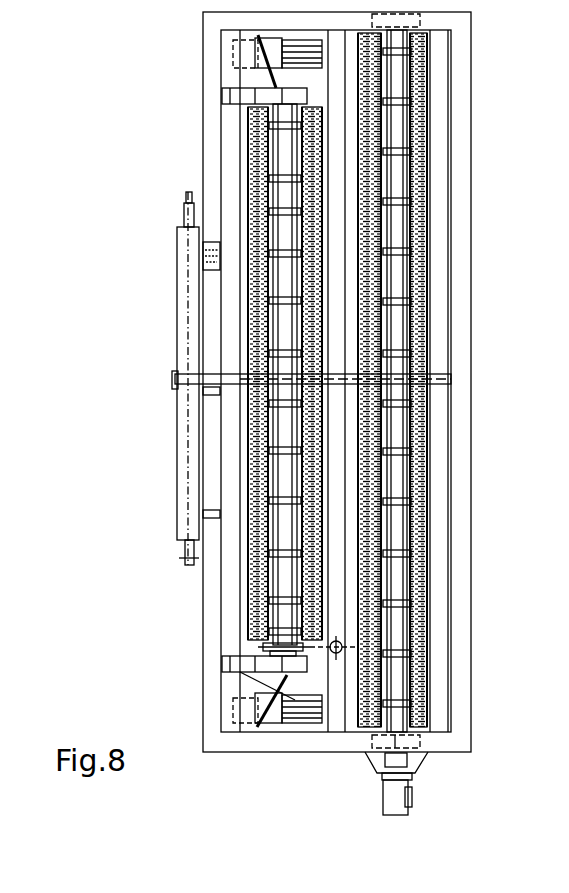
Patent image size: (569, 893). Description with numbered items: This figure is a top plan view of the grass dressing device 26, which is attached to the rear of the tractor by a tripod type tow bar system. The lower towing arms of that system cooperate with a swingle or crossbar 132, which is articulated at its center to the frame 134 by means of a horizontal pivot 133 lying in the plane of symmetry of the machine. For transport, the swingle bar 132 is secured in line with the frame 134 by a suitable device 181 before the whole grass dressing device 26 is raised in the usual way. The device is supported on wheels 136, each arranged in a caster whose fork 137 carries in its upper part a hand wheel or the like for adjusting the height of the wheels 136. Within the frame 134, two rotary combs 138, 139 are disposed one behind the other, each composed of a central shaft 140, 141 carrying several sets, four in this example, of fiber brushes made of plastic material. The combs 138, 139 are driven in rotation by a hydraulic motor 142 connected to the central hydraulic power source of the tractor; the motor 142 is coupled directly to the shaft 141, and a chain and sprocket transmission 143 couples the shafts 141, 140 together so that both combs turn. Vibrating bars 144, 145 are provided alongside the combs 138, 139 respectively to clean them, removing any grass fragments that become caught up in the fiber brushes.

The grass dressing device 26 is at (95, 175).
The swingle bar 132 is at (182, 463).
The horizontal pivot 133 is at (172, 378).
The frame 134 is at (213, 685).
The wheels 136 is at (230, 78).
The fork 137 is at (240, 45).
The rotary comb 138 is at (262, 632).
The rotary comb 139 is at (425, 673).
The central shaft 140 is at (275, 605).
The central shaft 141 is at (425, 593).
The hydraulic motor 142 is at (408, 793).
The chain and sprocket transmission 143 is at (340, 660).
The vibrating bar 144 is at (245, 560).
The vibrating bar 145 is at (425, 503).
The securing device 181 is at (205, 270).